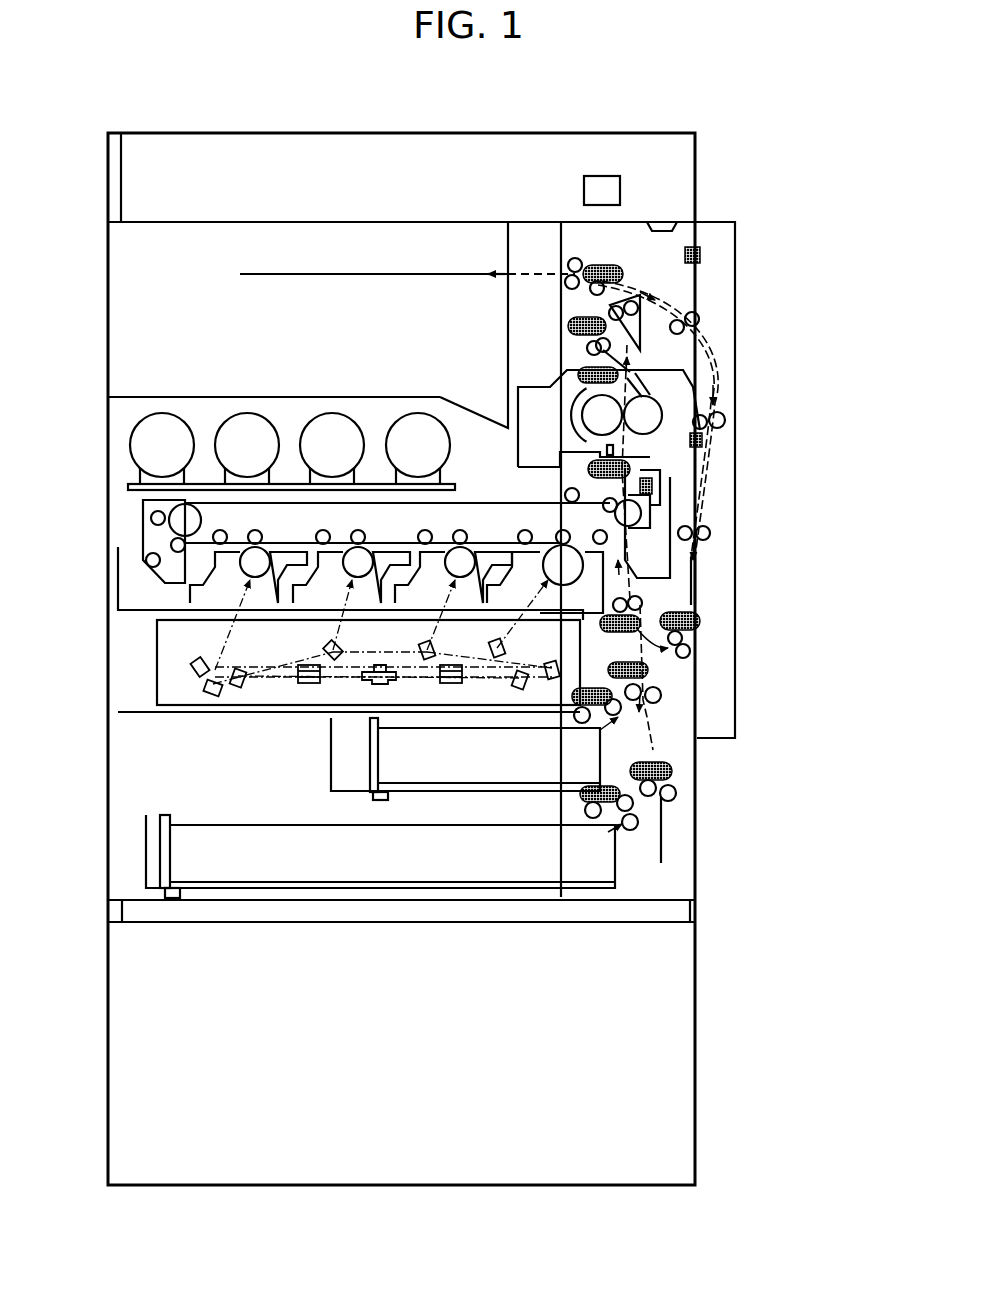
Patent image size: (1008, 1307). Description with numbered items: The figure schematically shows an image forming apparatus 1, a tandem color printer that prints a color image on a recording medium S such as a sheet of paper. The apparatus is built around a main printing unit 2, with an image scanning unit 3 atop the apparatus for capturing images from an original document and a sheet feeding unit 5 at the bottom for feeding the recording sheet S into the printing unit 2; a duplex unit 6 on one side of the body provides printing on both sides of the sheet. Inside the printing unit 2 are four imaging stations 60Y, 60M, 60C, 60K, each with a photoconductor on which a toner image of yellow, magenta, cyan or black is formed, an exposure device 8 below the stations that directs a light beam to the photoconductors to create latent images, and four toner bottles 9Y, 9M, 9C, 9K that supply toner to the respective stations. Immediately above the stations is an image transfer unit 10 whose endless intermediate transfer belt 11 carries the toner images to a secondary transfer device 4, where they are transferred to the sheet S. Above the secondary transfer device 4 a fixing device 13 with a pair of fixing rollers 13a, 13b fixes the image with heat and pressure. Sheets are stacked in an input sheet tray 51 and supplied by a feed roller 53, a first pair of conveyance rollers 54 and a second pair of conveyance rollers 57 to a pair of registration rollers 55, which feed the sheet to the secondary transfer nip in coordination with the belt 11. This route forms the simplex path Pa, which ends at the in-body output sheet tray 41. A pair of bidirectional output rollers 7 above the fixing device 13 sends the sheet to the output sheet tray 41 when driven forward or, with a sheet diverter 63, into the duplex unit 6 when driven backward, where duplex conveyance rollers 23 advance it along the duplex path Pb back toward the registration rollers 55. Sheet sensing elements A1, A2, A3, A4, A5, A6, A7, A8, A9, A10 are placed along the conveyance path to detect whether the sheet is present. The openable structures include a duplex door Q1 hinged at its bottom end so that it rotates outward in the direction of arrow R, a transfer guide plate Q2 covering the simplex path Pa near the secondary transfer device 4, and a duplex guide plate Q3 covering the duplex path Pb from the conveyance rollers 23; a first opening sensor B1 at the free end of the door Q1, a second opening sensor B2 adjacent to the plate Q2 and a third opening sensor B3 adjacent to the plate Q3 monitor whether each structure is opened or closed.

The image forming apparatus 1 is at (292, 103).
The printing unit 2 is at (101, 495).
The image scanning unit 3 is at (101, 183).
The secondary transfer device 4 is at (634, 513).
The sheet feeding unit 5 is at (101, 766).
The duplex unit 6 is at (748, 231).
The bidirectional output rollers 7 is at (568, 262).
The exposure device 8 is at (157, 677).
The toner bottle 9Y is at (168, 425).
The toner bottle 9C is at (253, 425).
The toner bottle 9M is at (338, 425).
The toner bottle 9K is at (424, 425).
The image transfer unit 10 is at (478, 498).
The intermediate transfer belt 11 is at (497, 503).
The fixing device 13 is at (665, 398).
The fixing roller 13a is at (598, 415).
The fixing roller 13b is at (652, 418).
The duplex conveyance rollers 23 is at (700, 318).
The output sheet tray 41 is at (203, 364).
The input sheet tray 51 is at (372, 755).
The feed roller 53 is at (578, 718).
The first pair of conveyance rollers 54 is at (621, 712).
The registration rollers 55 is at (642, 603).
The second pair of conveyance rollers 57 is at (661, 695).
The imaging station 60Y is at (220, 590).
The imaging station 60M is at (323, 590).
The imaging station 60C is at (426, 590).
The imaging station 60K is at (508, 590).
The sheet diverter 63 is at (590, 290).
The sheet sensing element A1 is at (603, 265).
The sheet sensing element A2 is at (570, 325).
The sheet sensing element A3 is at (590, 372).
The sheet sensing element A4 is at (590, 470).
The sheet sensing element A5 is at (702, 620).
The sheet sensing element A6 is at (620, 633).
The sheet sensing element A7 is at (650, 670).
The sheet sensing element A8 is at (575, 700).
The sheet sensing element A9 is at (674, 772).
The sheet sensing element A10 is at (600, 786).
The first opening sensor B1 is at (700, 250).
The second opening sensor B2 is at (652, 485).
The third opening sensor B3 is at (702, 440).
The duplex door Q1 is at (722, 255).
The transfer guide plate Q2 is at (662, 568).
The duplex guide plate Q3 is at (705, 467).
The simplex path Pa is at (653, 750).
The duplex path Pb is at (665, 298).
The recording medium S is at (405, 274).
The arrow R is at (880, 443).